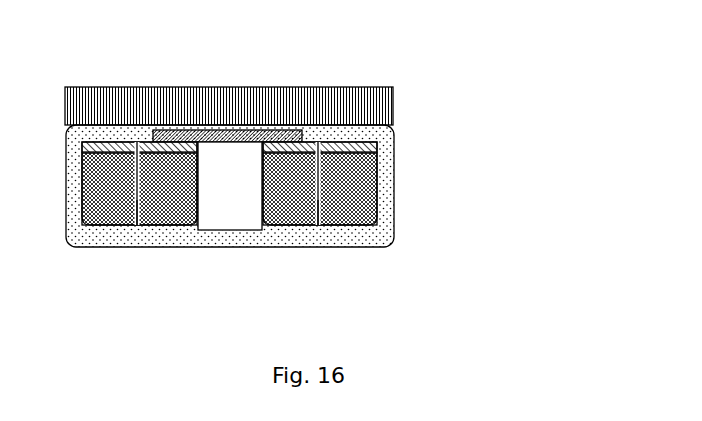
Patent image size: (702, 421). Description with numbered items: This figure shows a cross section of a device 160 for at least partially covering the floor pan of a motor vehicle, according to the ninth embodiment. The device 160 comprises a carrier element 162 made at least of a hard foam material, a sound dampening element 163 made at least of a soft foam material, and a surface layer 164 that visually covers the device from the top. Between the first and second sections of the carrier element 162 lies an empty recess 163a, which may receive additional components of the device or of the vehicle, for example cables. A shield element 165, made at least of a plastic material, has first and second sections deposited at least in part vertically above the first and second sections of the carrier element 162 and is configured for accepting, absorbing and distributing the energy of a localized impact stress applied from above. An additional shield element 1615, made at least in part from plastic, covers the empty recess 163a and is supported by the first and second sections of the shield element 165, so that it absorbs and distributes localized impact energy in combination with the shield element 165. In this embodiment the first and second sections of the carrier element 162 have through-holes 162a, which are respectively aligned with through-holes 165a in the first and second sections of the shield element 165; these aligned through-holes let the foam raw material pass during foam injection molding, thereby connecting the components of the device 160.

The device 160 is at (307, 170).
The carrier element 162 is at (377, 190).
The through-hole of the carrier element 162a is at (137, 225).
The sound dampening element 163 is at (394, 138).
The empty recess 163a is at (232, 200).
The surface layer 164 is at (393, 92).
The shield element 165 is at (113, 142).
The through-hole of the shield element 165a is at (140, 142).
The additional shield element 1615 is at (217, 130).